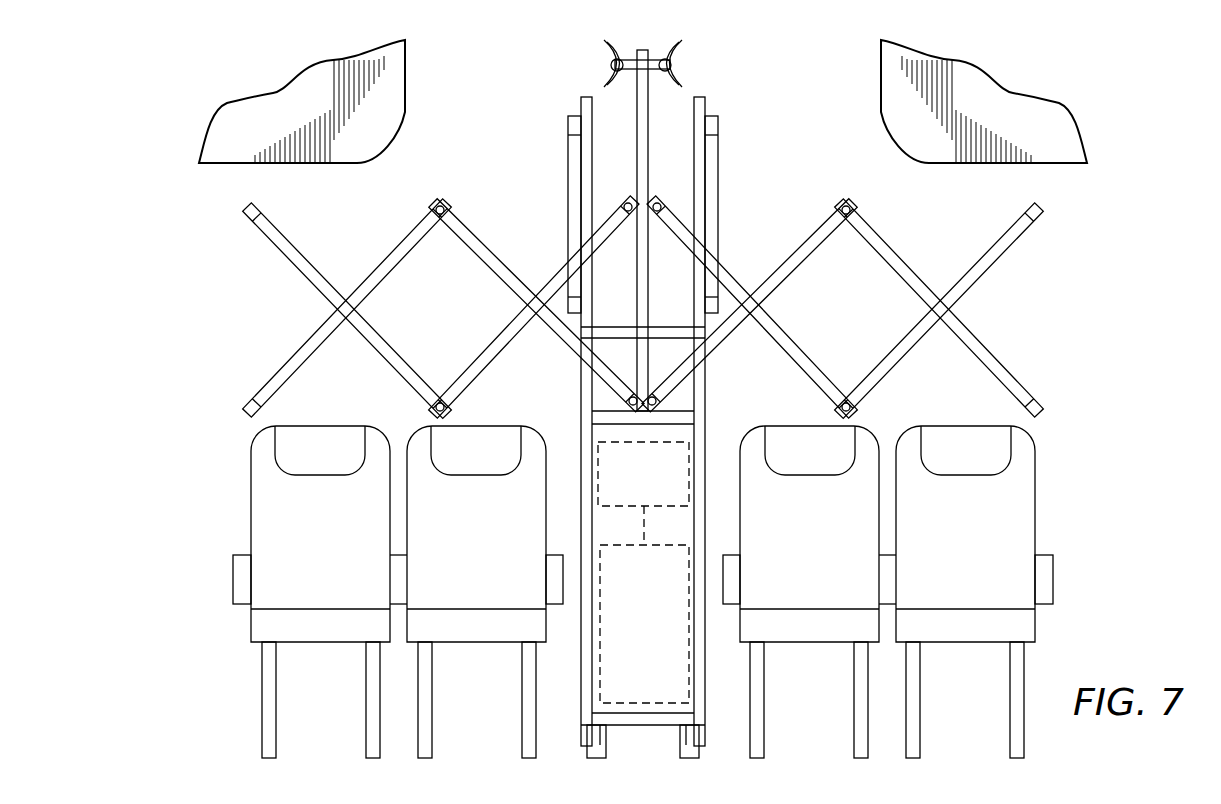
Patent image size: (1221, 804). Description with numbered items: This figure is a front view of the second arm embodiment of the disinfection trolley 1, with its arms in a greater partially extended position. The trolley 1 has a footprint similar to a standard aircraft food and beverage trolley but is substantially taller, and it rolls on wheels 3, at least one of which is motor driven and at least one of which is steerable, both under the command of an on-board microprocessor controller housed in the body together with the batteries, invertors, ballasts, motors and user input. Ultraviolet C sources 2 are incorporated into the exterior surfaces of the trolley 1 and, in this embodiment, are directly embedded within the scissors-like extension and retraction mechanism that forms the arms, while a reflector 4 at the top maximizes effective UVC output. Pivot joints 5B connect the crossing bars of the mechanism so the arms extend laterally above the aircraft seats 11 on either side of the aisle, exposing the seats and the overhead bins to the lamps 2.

The trolley 1 is at (716, 737).
The UVC source 2 is at (490, 250).
The trolley wheels 3 is at (593, 750).
The reflector 4 is at (668, 45).
The pivot joint 5B is at (441, 380).
The aircraft seats 11 is at (270, 492).